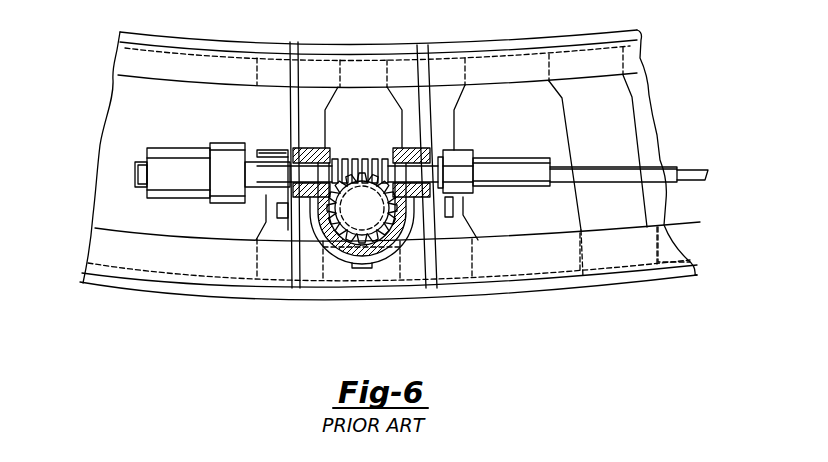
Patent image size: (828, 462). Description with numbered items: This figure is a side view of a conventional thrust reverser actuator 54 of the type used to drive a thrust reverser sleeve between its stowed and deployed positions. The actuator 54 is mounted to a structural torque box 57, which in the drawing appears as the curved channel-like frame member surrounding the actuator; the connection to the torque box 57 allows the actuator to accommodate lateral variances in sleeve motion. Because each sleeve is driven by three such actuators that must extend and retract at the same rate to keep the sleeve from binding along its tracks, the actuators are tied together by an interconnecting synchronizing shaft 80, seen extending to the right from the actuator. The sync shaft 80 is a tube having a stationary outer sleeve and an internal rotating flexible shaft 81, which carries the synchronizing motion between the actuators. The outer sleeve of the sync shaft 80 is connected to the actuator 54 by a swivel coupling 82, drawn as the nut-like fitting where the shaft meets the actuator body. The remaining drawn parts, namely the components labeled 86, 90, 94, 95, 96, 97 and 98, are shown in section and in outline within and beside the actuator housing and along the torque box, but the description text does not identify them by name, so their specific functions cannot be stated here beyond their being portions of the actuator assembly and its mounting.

The hydraulic actuator 54 is at (396, 244).
The structural torque box 57 is at (108, 33).
The synchronizing shaft 80 is at (670, 166).
The internal rotating flexible shaft 81 is at (700, 168).
The swivel coupling 82 is at (466, 150).
The mounting bracket 86 is at (337, 250).
The worm gear 90 is at (357, 159).
The worm wheel 94 is at (353, 220).
The end cap 95 is at (135, 172).
The motor 96 is at (178, 148).
The adapter plate 97 is at (262, 150).
The bearing block 98 is at (294, 148).